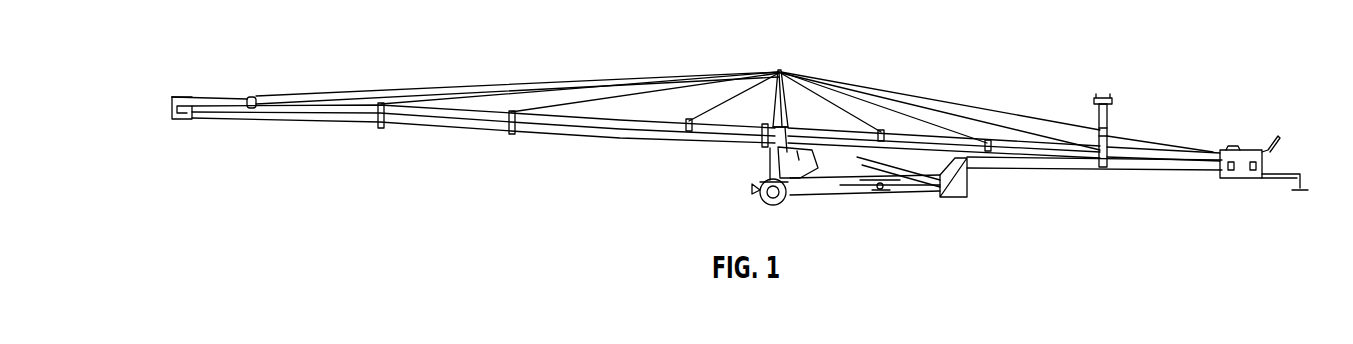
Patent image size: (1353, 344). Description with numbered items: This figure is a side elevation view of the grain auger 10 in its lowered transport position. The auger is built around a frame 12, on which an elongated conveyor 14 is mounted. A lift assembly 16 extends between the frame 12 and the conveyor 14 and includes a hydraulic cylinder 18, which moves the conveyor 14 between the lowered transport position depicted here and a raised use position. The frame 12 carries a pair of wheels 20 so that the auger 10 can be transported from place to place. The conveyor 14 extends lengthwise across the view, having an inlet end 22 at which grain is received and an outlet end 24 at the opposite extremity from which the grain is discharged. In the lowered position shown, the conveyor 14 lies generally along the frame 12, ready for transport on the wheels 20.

The grain auger 10 is at (943, 46).
The frame 12 is at (634, 135).
The conveyor 14 is at (997, 178).
The lift assembly 16 is at (807, 158).
The hydraulic cylinder 18 is at (883, 184).
The wheels 20 is at (768, 202).
The inlet end 22 is at (1232, 153).
The outlet end 24 is at (177, 110).